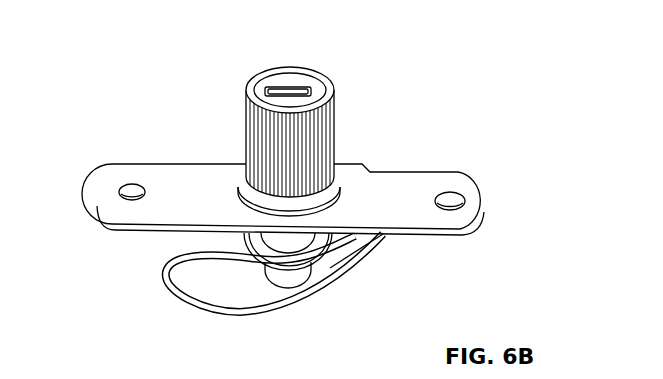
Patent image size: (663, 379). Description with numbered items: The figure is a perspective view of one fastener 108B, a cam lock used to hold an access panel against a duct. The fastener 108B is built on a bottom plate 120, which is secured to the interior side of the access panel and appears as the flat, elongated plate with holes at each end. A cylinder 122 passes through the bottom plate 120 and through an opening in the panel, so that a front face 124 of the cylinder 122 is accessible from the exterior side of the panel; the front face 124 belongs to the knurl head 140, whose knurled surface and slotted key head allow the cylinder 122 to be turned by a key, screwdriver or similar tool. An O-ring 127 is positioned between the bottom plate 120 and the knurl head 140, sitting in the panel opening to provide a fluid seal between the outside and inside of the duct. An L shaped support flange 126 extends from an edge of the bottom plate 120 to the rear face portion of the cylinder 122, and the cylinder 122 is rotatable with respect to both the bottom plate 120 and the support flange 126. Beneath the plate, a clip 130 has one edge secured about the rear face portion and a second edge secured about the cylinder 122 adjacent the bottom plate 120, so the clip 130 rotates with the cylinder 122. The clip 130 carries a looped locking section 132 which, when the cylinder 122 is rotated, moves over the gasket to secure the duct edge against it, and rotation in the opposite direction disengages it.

The fastener 108B is at (178, 42).
The bottom plate 120 is at (406, 182).
The cylinder 122 is at (297, 278).
The front face 124 is at (268, 82).
The L shaped support flange 126 is at (341, 238).
The O-ring 127 is at (239, 180).
The clip 130 is at (394, 241).
The locking section 132 is at (242, 306).
The knurl head 140 is at (262, 141).